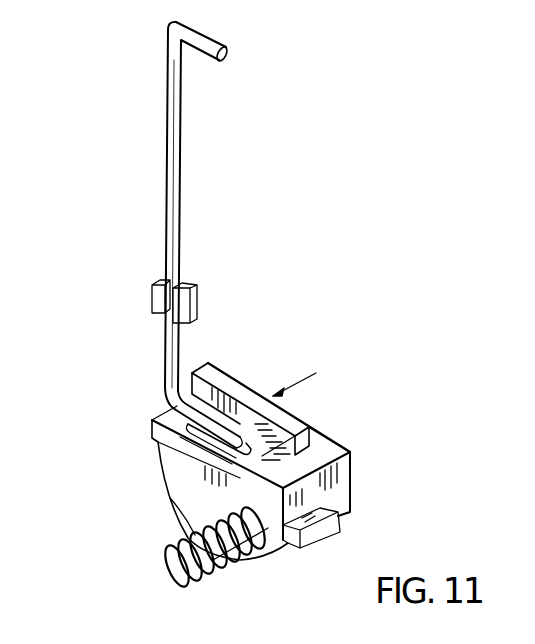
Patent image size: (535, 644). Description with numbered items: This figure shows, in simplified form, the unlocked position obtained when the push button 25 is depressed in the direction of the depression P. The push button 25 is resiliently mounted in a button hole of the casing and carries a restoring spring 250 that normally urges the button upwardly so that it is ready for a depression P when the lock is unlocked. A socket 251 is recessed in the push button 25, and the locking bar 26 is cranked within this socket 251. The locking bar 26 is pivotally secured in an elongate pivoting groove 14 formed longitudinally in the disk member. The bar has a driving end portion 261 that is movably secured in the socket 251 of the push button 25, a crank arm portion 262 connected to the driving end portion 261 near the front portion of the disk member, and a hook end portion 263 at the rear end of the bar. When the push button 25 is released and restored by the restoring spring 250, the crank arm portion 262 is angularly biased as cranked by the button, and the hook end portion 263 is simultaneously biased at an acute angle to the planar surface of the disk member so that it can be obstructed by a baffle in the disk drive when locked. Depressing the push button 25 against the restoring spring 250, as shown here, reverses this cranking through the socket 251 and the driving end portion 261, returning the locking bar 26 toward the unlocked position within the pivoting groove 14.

The elongate pivoting groove 14 is at (183, 283).
The push button 25 is at (330, 458).
The locking bar 26 is at (167, 117).
The restoring spring 250 is at (182, 512).
The socket 251 is at (255, 442).
The driving end portion 261 is at (205, 462).
The crank arm portion 262 is at (185, 387).
The hook end portion 263 is at (208, 42).
The depression P is at (297, 380).